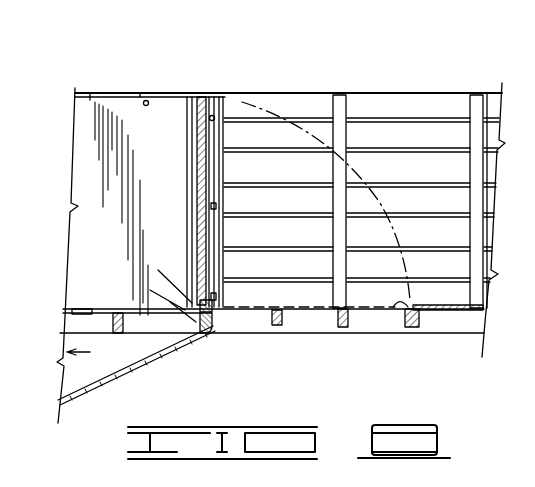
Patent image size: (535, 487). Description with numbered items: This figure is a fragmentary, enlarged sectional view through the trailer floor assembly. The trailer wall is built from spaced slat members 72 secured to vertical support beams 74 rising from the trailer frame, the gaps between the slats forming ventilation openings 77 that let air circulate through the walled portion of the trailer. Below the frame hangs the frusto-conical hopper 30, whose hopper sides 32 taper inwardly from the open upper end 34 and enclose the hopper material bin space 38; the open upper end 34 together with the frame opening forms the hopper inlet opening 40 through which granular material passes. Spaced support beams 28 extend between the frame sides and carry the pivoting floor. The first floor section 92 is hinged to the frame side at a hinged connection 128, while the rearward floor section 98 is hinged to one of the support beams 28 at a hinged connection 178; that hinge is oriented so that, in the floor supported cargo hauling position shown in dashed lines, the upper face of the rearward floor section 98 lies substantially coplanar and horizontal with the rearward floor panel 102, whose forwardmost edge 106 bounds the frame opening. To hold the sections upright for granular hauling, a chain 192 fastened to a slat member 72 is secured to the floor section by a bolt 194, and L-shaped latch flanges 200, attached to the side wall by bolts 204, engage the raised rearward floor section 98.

The support beams 28 is at (118, 335).
The hopper 30 is at (147, 363).
The hopper sides 32 is at (88, 388).
The open upper end 34 is at (178, 306).
The hopper material bin space 38 is at (66, 352).
The hopper inlet opening 40 is at (197, 305).
The slat members 72 is at (397, 165).
The vertical support beams 74 is at (340, 100).
The ventilation openings 77 is at (244, 218).
The first floor section 92 is at (112, 110).
The rearward floor section 98 is at (197, 130).
The rearward floor panel 102 is at (455, 311).
The forwardmost edge 106 is at (398, 305).
The hinged connection 128 is at (180, 318).
The hinged connection 178 is at (213, 322).
The chain 192 is at (146, 100).
The bolt 194 is at (145, 105).
The latch flanges 200 is at (218, 140).
The bolts 204 is at (211, 112).